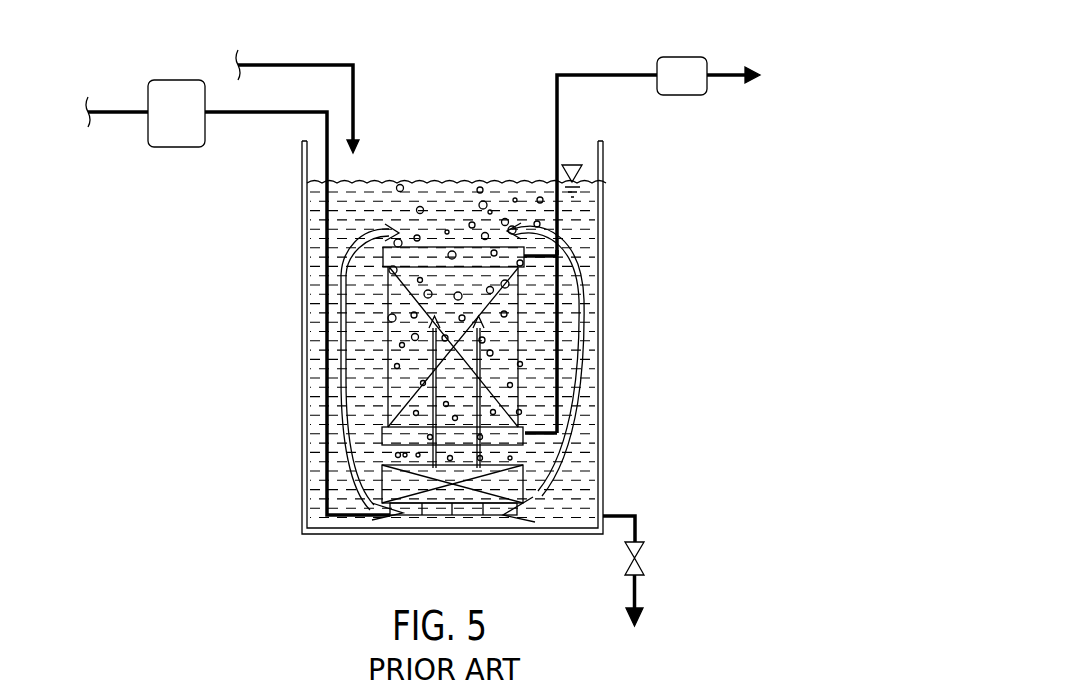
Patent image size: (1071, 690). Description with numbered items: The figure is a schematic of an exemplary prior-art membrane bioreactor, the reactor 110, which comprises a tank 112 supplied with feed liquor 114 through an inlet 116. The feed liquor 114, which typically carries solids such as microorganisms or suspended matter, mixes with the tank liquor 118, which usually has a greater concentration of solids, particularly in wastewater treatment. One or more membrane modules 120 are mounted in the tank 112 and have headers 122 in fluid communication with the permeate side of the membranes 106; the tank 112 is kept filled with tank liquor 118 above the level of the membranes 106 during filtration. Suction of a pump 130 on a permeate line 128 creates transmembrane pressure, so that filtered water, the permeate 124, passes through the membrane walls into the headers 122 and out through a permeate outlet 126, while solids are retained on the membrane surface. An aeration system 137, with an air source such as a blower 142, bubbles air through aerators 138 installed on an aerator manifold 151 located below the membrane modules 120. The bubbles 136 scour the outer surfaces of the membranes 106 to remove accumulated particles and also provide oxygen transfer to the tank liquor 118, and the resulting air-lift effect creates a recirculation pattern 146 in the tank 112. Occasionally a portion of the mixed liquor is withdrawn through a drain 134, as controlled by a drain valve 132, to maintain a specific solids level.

The membranes 106 is at (451, 302).
The reactor 110 is at (262, 504).
The tank 112 is at (573, 537).
The feed liquor 114 is at (356, 149).
The inlet 116 is at (355, 103).
The tank liquor 118 is at (315, 231).
The membrane modules 120 is at (512, 305).
The headers 122 is at (467, 245).
The permeate 124 is at (742, 82).
The permeate outlet 126 is at (727, 72).
The permeate line 128 is at (583, 74).
The pump 130 is at (683, 57).
The drain valve 132 is at (643, 552).
The drain 134 is at (635, 512).
The bubbles 136 is at (520, 194).
The aeration system 137 is at (259, 120).
The aerators 138 is at (525, 480).
The blower 142 is at (180, 147).
The recirculation pattern 146 is at (338, 315).
The aerator manifold 151 is at (463, 517).